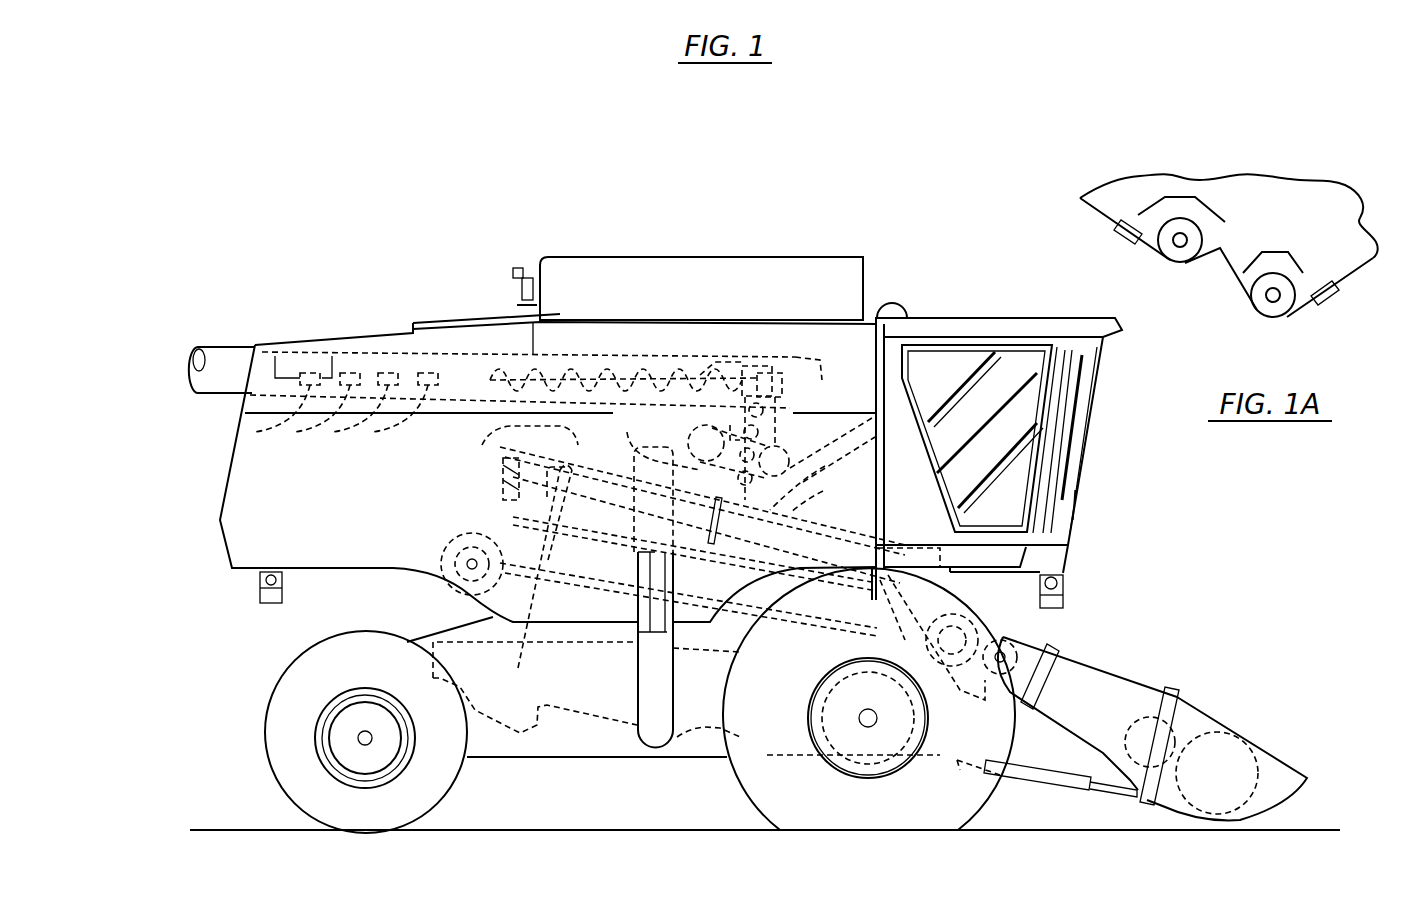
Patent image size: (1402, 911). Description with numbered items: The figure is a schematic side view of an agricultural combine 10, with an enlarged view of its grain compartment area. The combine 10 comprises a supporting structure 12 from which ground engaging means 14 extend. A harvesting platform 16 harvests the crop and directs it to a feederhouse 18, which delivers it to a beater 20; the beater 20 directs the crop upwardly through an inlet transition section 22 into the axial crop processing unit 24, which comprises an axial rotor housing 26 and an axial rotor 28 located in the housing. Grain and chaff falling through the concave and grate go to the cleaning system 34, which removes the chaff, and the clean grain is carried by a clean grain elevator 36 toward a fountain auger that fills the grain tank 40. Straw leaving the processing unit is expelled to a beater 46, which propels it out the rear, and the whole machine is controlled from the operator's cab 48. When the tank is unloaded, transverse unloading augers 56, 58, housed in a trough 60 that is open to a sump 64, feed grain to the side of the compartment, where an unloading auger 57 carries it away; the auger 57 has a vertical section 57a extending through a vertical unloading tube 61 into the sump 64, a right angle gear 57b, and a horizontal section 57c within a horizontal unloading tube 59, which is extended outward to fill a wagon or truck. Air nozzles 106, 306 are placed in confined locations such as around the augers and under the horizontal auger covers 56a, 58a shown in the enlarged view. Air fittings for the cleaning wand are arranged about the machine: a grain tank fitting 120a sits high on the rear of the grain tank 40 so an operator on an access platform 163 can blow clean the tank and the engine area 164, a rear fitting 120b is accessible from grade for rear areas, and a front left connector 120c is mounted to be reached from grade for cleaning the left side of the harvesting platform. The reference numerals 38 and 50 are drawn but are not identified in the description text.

In FIG. 1, the agricultural combine 10 is at (993, 186).
In FIG. 1, the supporting structure 12 is at (463, 632).
In FIG. 1, the ground engaging means 14 is at (457, 787).
In FIG. 1, the harvesting platform 16 is at (1223, 720).
In FIG. 1, the feederhouse 18 is at (1097, 670).
In FIG. 1, the beater 20 is at (986, 618).
In FIG. 1, the inlet transition section 22 is at (963, 593).
In FIG. 1, the axial crop processing unit 24 is at (823, 491).
In FIG. 1, the axial rotor housing 26 is at (482, 445).
In FIG. 1, the axial rotor 28 is at (518, 668).
In FIG. 1, the cleaning system 34 is at (607, 620).
In FIG. 1, the clean grain elevator 36 is at (662, 685).
In FIG. 1, the auger housing 38 is at (718, 360).
In FIG. 1, the grain tank 40 is at (843, 393).
In FIG. 1, the beater 46 is at (455, 535).
In FIG. 1, the operator's cab 48 is at (971, 410).
In FIG. 1, the beacon 50 is at (895, 310).
In FIG. 1, the transverse unloading auger 56 is at (795, 434).
In FIG. 1A, the transverse unloading auger 56 is at (1257, 312).
In FIG. 1A, the horizontal auger cover 56a is at (1175, 197).
In FIG. 1, the unloading auger 57 is at (638, 365).
In FIG. 1, the vertical section 57a is at (800, 400).
In FIG. 1, the right angle gear 57b is at (780, 440).
In FIG. 1, the horizontal section 57c is at (693, 360).
In FIG. 1, the transverse unloading auger 58 is at (688, 430).
In FIG. 1A, the transverse unloading auger 58 is at (1172, 267).
In FIG. 1A, the horizontal auger cover 58a is at (1273, 252).
In FIG. 1, the horizontal unloading tube 59 is at (207, 347).
In FIG. 1, the trough 60 is at (887, 435).
In FIG. 1A, the trough 60 is at (1362, 285).
In FIG. 1, the vertical unloading tube 61 is at (868, 270).
In FIG. 1, the sump 64 is at (825, 466).
In FIG. 1, the stationary nozzle 106 is at (312, 415).
In FIG. 1A, the stationary nozzle 106 is at (1128, 243).
In FIG. 1, the alternate nozzle 306 is at (346, 402).
In FIG. 1A, the alternate nozzle 306 is at (1226, 262).
In FIG. 1, the grain tank fitting 120a is at (517, 268).
In FIG. 1, the rear fitting 120b is at (260, 603).
In FIG. 1, the front left connector 120c is at (1065, 600).
In FIG. 1, the access platform 163 is at (437, 322).
In FIG. 1, the engine area 164 is at (350, 335).